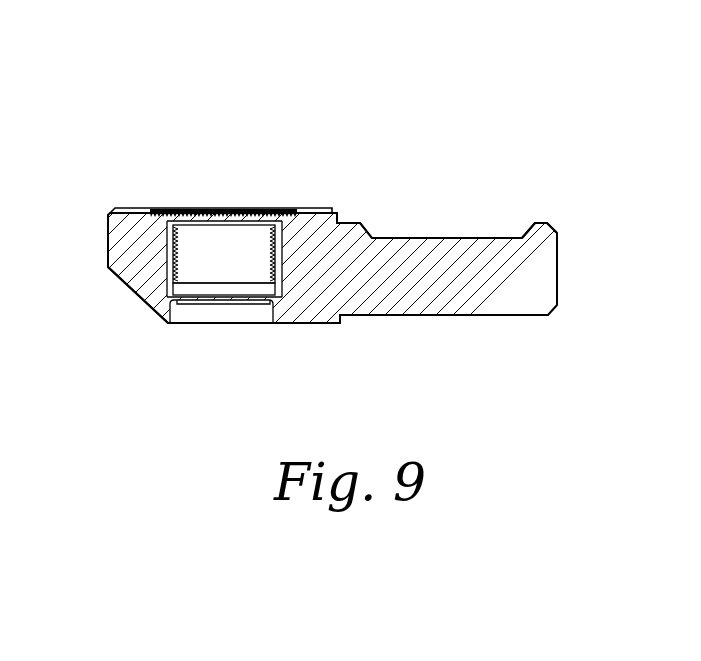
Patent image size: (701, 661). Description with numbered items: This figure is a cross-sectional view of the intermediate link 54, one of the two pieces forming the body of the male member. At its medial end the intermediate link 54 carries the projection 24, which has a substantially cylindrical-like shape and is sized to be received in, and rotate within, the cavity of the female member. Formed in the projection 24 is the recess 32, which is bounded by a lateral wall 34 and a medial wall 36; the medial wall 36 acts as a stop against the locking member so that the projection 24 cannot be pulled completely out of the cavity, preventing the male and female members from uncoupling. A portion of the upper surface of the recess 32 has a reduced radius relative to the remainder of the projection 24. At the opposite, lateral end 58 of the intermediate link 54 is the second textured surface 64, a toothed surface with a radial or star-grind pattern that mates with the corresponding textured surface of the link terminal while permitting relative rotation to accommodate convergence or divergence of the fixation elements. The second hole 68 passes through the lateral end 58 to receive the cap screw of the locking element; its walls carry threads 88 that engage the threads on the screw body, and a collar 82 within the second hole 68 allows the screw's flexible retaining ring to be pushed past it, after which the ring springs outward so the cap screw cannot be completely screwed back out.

The intermediate link 54 is at (440, 113).
The projection 24 is at (398, 316).
The recess 32 is at (453, 238).
The lateral wall 34 is at (373, 222).
The medial wall 36 is at (533, 225).
The lateral end 58 is at (132, 300).
The second textured surface 64 is at (157, 208).
The second hole 68 is at (272, 208).
The threads 88 is at (178, 242).
The collar 82 is at (180, 307).